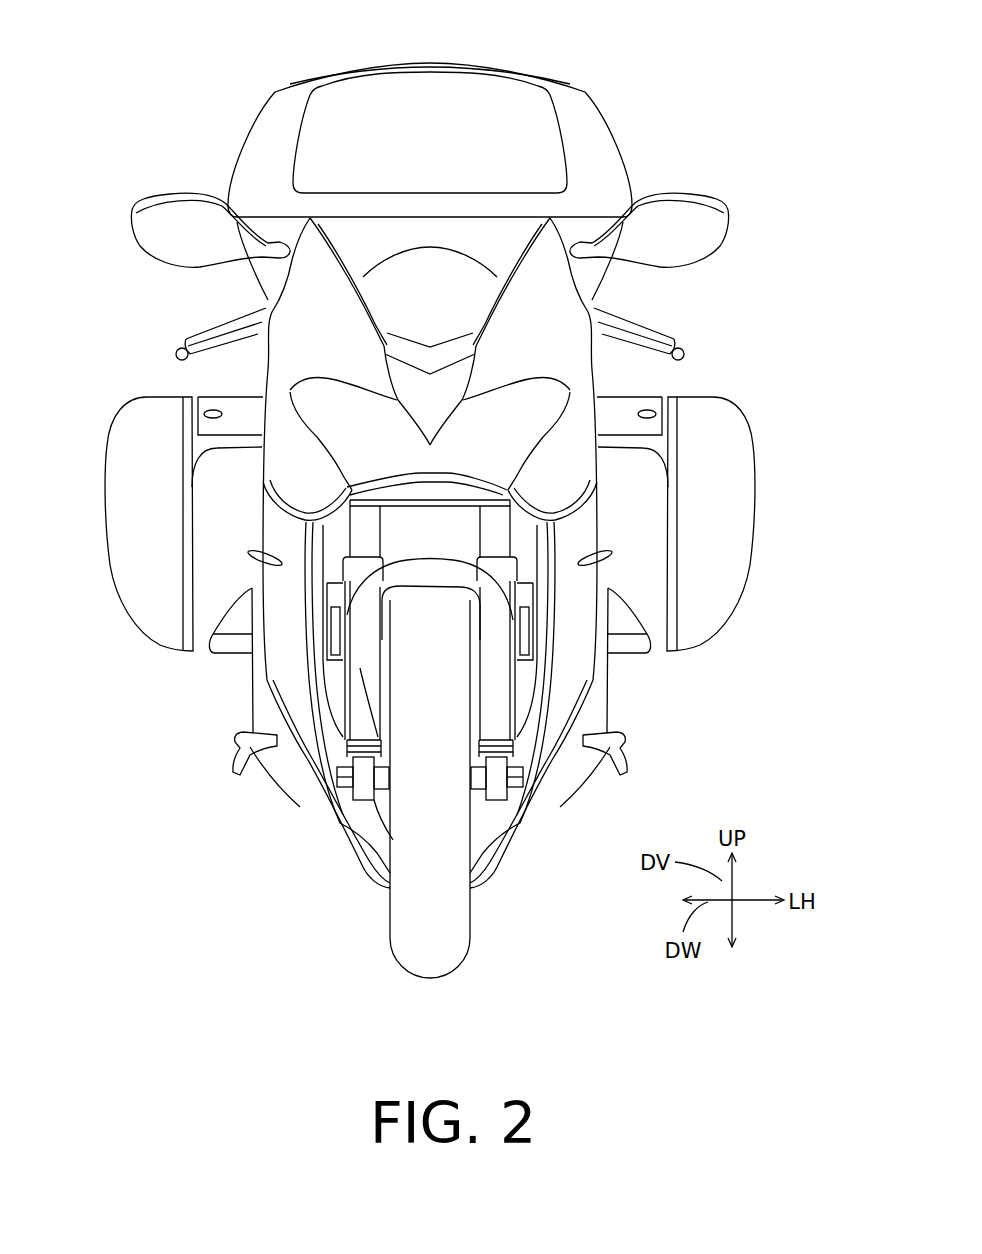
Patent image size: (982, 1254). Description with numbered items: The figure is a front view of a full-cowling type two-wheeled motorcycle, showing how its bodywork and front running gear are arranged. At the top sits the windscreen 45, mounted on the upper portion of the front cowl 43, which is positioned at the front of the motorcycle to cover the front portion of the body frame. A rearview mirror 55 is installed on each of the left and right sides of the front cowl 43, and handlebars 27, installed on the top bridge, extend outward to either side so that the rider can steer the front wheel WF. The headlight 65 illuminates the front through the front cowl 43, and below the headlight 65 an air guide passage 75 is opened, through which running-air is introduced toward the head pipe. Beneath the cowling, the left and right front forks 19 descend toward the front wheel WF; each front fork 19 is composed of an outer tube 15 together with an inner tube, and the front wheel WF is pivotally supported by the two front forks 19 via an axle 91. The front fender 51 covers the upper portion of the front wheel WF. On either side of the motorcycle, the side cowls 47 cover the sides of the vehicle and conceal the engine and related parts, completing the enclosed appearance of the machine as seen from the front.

The windscreen 45 is at (425, 88).
The rearview mirror 55 is at (168, 208).
The handlebars 27 is at (200, 332).
The front cowl 43 is at (565, 285).
The headlight 65 is at (547, 409).
The air guide passage 75 is at (401, 493).
The outer tube 15 is at (503, 588).
The front fork 19 is at (430, 600).
The front fender 51 is at (360, 668).
The side cowl 47 is at (322, 760).
The axle 91 is at (385, 757).
The front wheel WF is at (452, 946).